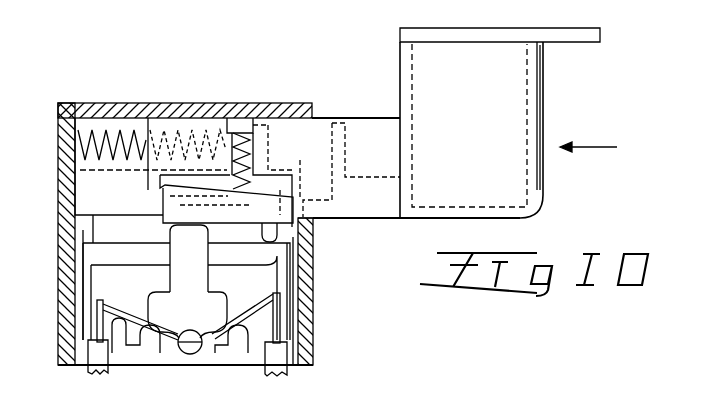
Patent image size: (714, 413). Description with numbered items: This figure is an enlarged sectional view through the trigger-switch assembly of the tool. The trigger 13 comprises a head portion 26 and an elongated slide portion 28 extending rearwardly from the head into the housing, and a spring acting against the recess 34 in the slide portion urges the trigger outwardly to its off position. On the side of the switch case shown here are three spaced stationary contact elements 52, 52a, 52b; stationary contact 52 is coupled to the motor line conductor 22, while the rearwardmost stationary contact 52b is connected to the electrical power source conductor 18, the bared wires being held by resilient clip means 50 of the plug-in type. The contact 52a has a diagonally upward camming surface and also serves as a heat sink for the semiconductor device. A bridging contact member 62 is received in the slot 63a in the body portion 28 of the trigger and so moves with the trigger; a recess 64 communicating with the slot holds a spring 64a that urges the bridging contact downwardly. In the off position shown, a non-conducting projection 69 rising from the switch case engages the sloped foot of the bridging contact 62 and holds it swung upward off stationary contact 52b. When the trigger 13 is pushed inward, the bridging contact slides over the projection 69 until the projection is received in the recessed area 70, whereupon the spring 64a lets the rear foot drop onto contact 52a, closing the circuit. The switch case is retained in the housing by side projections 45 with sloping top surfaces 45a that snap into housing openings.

The trigger 13 is at (545, 78).
The electrical lead 18 is at (285, 378).
The electrical lead 22 is at (88, 372).
The head portion 26 is at (508, 114).
The slide portion 28 is at (384, 220).
The recess 34 is at (212, 118).
The projection 45 is at (190, 355).
The sloping top surface 45a is at (190, 330).
The resilient clip 50 is at (150, 360).
The stationary contact 52 is at (313, 268).
The stationary contact 52a is at (145, 250).
The stationary contact 52b is at (83, 262).
The bridging contact member 62 is at (165, 186).
The slot 63a is at (293, 180).
The recess 64 is at (250, 150).
The spring 64a is at (238, 178).
The projection 69 is at (200, 230).
The recessed area 70 is at (313, 233).